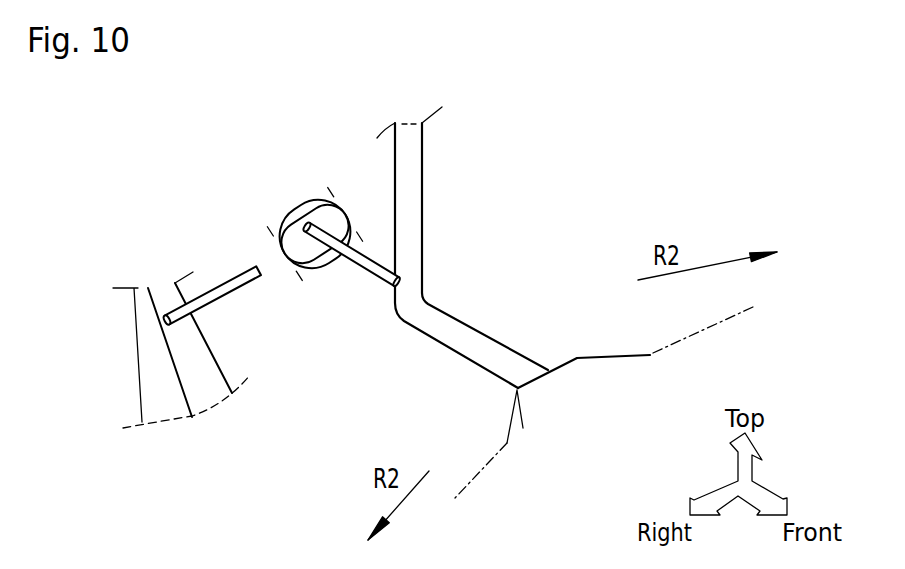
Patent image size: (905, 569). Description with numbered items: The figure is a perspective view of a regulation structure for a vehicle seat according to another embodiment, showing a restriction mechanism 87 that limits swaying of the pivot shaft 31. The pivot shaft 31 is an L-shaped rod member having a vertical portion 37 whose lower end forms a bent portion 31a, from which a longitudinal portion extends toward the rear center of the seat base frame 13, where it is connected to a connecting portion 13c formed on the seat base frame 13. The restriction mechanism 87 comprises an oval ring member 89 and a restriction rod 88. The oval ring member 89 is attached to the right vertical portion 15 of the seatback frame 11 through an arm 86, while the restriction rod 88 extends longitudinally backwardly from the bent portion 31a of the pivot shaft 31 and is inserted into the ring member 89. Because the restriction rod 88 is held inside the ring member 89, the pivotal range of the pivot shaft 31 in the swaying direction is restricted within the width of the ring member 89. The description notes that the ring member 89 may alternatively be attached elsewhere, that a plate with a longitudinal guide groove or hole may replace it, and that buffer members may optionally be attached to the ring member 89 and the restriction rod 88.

The seatback frame 11 is at (163, 290).
The seat base frame 13 is at (698, 325).
The connecting portion 13c is at (563, 378).
The right vertical portion 15 is at (150, 347).
The pivot shaft 31 is at (422, 168).
The bent portion 31a is at (427, 297).
The vertical portion 37 is at (412, 212).
The arm 86 is at (212, 292).
The restriction mechanism 87 is at (281, 231).
The restriction rod 88 is at (362, 262).
The oval ring member 89 is at (318, 188).